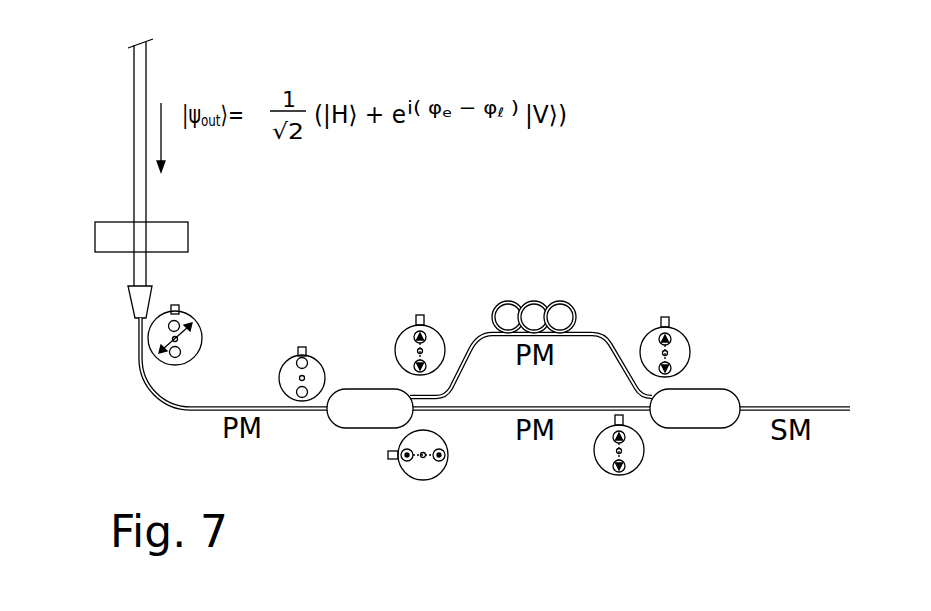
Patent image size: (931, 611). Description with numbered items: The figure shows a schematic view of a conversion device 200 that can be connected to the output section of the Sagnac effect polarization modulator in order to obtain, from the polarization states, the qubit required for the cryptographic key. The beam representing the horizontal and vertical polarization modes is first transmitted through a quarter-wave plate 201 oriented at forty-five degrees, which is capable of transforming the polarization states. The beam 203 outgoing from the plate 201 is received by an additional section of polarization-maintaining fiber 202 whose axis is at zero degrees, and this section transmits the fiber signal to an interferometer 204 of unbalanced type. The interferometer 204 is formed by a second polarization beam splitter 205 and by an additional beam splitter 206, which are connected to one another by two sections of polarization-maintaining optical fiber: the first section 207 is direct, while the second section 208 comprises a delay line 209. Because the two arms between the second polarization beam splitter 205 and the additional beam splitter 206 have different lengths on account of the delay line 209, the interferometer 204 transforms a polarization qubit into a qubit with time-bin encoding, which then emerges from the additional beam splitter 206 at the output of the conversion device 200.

The conversion device 200 is at (659, 238).
The lambda/4 plate at 45° 201 is at (118, 232).
The polarization-maintaining fiber section with axis at 0° 202 is at (137, 336).
The beam 203 is at (141, 263).
The interferometer 204 is at (485, 470).
The second polarization beam splitter 205 is at (365, 428).
The additional beam splitter 206 is at (697, 430).
The first direct section of polarization-maintaining optical fiber 207 is at (578, 412).
The second section of polarization-maintaining optical fiber 208 is at (470, 345).
The delay line 209 is at (535, 303).